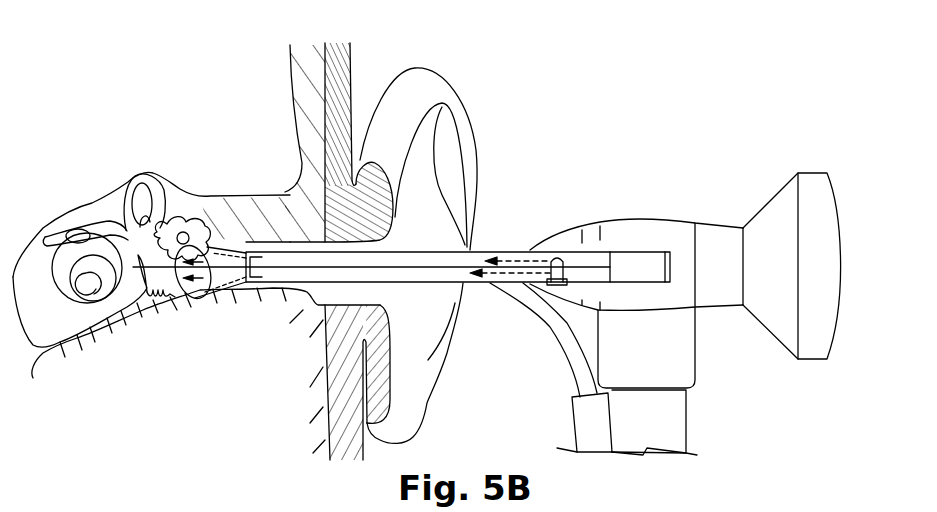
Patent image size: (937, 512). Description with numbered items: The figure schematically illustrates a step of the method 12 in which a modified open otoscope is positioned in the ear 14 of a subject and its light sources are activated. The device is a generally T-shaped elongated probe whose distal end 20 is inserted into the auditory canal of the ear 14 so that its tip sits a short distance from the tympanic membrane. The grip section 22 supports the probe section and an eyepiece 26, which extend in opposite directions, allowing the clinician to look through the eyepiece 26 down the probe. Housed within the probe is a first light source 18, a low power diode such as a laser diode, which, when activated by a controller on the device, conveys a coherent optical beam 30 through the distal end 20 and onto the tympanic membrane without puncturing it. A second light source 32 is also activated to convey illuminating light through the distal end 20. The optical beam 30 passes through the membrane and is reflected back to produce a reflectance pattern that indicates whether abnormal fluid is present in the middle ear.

The method 12 is at (765, 137).
The ear 14 is at (465, 84).
The first light source 18 is at (640, 263).
The distal end 20 is at (259, 242).
The grip section 22 is at (701, 425).
The eyepiece 26 is at (840, 204).
The optical beam 30 is at (287, 270).
The second light source 32 is at (554, 252).